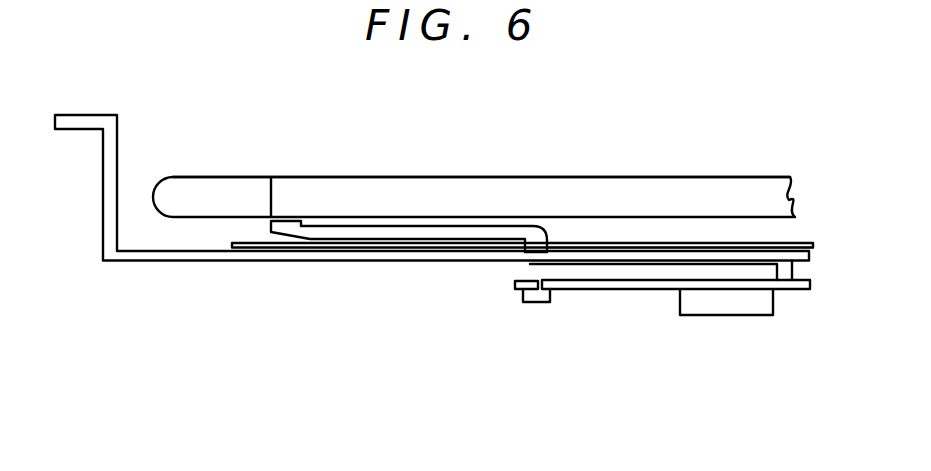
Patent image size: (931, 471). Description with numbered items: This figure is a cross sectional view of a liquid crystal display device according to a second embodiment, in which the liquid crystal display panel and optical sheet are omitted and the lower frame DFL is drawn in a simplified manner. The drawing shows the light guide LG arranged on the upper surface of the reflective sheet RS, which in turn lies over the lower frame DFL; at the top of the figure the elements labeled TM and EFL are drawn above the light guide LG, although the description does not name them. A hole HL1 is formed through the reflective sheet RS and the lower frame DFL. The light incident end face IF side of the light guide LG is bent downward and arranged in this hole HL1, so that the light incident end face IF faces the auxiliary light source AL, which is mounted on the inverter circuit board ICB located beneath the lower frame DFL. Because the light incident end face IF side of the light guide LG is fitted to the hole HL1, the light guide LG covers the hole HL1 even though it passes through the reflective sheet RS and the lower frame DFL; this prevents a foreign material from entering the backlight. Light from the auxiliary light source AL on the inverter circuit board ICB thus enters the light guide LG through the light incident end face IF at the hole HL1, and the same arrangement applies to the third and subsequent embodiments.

The touch module TM is at (233, 183).
The external front light / upper layer of touch module EFL is at (515, 177).
The light guide LG is at (358, 234).
The lower frame DFL is at (370, 262).
The reflective sheet RS is at (687, 246).
The hole HL1 is at (550, 257).
The light incident end face IF is at (530, 264).
The inverter circuit board ICB is at (660, 290).
The auxiliary light source AL is at (533, 303).